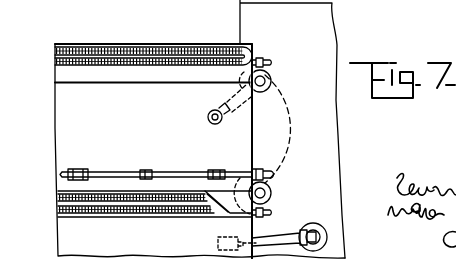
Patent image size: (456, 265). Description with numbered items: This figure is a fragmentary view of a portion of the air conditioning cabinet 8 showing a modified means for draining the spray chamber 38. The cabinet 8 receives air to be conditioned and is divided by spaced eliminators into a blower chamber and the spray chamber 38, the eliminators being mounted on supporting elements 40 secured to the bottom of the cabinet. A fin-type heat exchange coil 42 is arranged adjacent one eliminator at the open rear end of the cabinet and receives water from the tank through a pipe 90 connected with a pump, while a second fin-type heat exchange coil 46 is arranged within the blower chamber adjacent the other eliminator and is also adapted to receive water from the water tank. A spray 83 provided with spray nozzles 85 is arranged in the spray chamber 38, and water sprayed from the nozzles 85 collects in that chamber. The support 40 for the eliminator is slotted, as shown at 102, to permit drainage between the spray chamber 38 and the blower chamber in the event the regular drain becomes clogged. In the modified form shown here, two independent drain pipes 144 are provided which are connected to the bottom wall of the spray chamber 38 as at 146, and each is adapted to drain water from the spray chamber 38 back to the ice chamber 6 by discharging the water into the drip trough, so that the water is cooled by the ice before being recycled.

The ice chamber 6 is at (310, 43).
The cabinet 8 is at (55, 118).
The spray chamber 38 is at (153, 151).
The heat exchange coil 42 is at (100, 50).
The drain pipes 144 is at (252, 104).
The connection to bottom wall of spray chamber 146 is at (209, 119).
The spray 83 is at (100, 170).
The spray nozzles 85 is at (76, 168).
The heat exchange coil 46 is at (69, 208).
The supporting elements 40 is at (211, 201).
The slot 102 is at (217, 217).
The pipe 90 is at (279, 236).